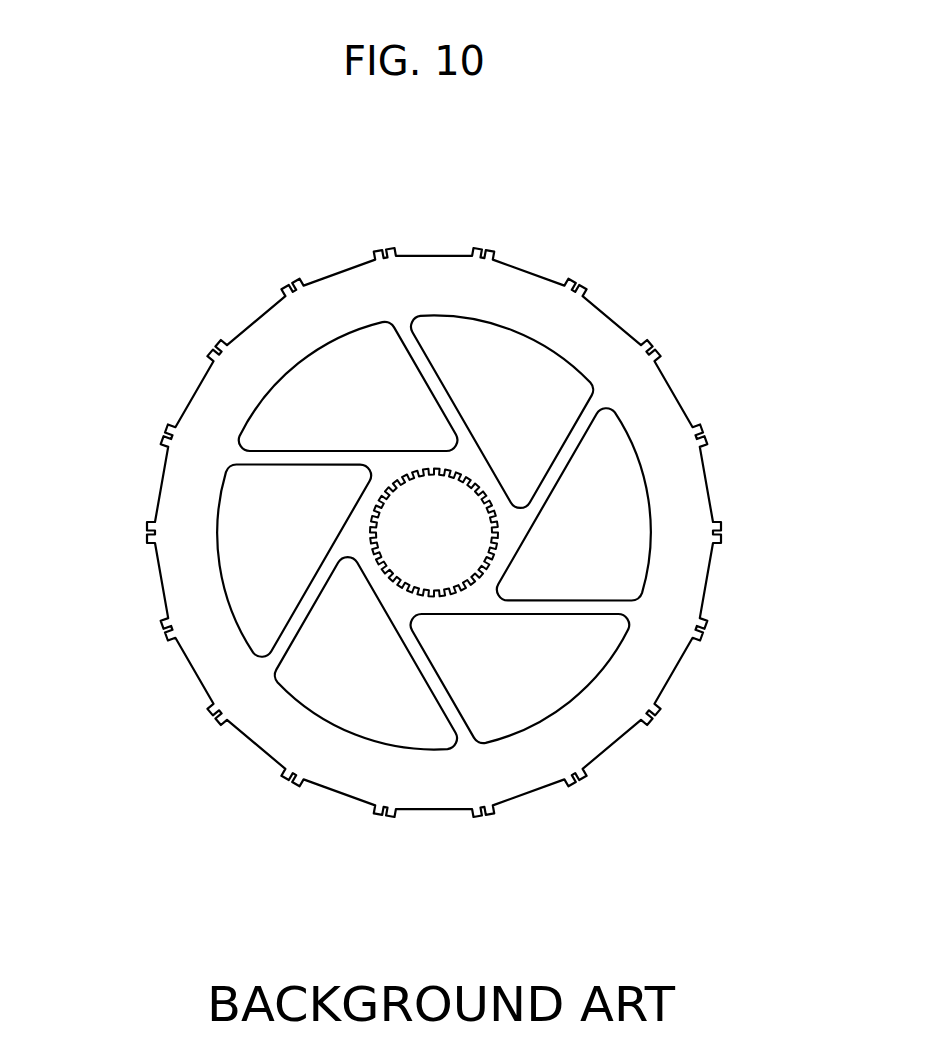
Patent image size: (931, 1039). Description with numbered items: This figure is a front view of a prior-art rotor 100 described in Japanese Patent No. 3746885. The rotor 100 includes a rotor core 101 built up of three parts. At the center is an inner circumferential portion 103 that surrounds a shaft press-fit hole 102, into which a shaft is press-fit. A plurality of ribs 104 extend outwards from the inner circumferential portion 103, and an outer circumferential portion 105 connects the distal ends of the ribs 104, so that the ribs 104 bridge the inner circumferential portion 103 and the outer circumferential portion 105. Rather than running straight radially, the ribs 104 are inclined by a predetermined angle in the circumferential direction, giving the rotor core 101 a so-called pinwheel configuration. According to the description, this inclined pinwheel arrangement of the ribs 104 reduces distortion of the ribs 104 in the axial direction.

The rotor 100 is at (180, 215).
The rotor core 101 is at (197, 395).
The shaft press-fit hole 102 is at (455, 475).
The inner circumferential portion 103 is at (358, 513).
The ribs 104 is at (325, 457).
The outer circumferential portion 105 is at (215, 642).